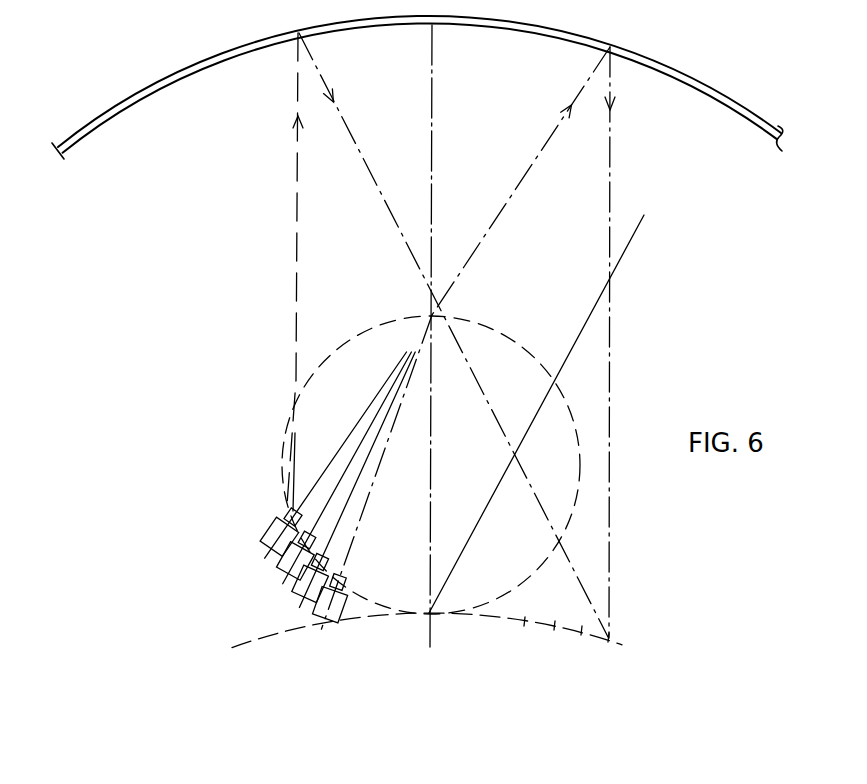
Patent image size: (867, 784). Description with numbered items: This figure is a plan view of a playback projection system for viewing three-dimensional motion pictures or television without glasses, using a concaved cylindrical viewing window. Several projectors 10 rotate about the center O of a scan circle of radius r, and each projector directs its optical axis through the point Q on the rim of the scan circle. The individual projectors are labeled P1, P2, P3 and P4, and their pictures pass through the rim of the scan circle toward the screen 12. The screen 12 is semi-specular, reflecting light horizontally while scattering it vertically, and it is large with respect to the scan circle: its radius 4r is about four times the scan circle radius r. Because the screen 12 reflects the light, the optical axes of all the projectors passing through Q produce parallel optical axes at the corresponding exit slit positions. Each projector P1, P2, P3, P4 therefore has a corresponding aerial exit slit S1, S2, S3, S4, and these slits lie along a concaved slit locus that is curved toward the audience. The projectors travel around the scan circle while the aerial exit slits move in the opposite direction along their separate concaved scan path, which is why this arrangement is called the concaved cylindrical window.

The screen 12 is at (128, 107).
The projectors 10 is at (304, 472).
The projector P1 is at (292, 510).
The projector P2 is at (307, 532).
The projector P3 is at (323, 557).
The projector P4 is at (342, 575).
The aerial exit slit S1 is at (608, 638).
The aerial exit slit S2 is at (582, 632).
The aerial exit slit S3 is at (555, 628).
The aerial exit slit S4 is at (522, 624).
The point on the rim of the scan circle Q is at (428, 312).
The center O is at (441, 463).
The radius of the scan circle r is at (431, 468).
The screen radius 4r is at (717, 100).